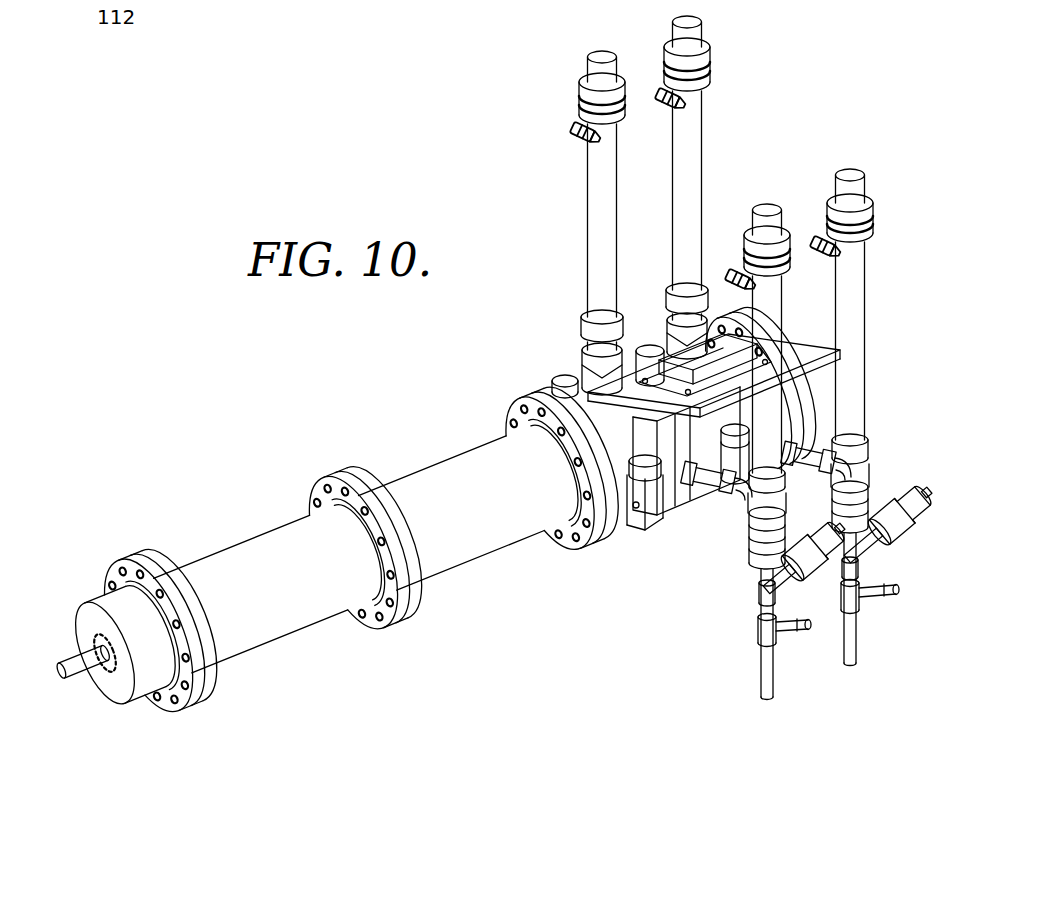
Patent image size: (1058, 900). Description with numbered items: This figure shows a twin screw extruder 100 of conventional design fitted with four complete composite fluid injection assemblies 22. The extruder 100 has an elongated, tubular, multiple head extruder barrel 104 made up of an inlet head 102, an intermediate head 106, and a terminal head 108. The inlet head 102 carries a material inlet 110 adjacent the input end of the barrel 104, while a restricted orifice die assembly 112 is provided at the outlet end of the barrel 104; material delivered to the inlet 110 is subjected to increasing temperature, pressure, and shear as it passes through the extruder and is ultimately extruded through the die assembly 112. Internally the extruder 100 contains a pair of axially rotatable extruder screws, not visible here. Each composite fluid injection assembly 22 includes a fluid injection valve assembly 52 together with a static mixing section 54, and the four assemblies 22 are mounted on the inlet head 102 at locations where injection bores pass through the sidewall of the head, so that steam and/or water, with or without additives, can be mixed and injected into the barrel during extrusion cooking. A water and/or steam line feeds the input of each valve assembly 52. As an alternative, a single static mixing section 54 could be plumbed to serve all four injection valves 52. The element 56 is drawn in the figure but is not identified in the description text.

The composite fluid injection assembly 22 is at (550, 160).
The fluid injection valve assembly 52 is at (544, 362).
The static mixing section 54 is at (724, 112).
The valve 56 is at (642, 533).
The twin screw extruder 100 is at (488, 352).
The inlet head 102 is at (628, 418).
The extruder barrel 104 is at (421, 452).
The intermediate head 106 is at (473, 543).
The terminal head 108 is at (278, 624).
The material inlet 110 is at (737, 348).
The restricted orifice die assembly 112 is at (102, 690).